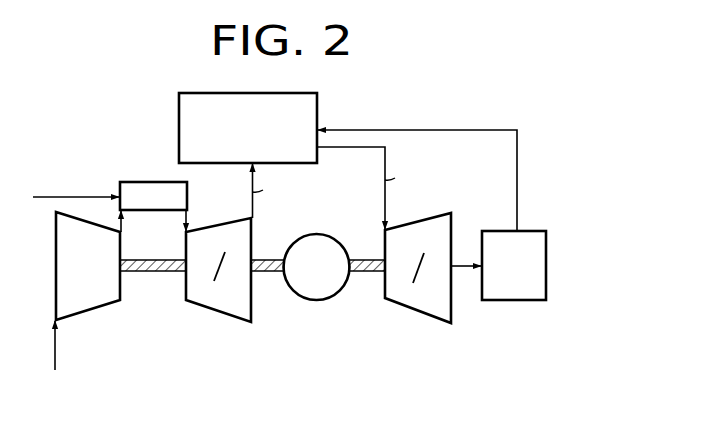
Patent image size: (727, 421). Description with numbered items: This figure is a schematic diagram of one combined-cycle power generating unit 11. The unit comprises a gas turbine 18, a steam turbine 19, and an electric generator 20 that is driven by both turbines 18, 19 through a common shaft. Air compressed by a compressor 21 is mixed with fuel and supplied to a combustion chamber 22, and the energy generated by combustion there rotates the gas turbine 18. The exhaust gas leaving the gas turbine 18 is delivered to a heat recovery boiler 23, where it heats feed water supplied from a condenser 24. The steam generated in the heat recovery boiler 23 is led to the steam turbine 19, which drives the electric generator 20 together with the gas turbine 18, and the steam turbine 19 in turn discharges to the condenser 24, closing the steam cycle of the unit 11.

The combined-cycle power generating unit 11 is at (565, 104).
The gas turbine 18 is at (208, 311).
The steam turbine 19 is at (411, 315).
The electric generator 20 is at (318, 300).
The compressor 21 is at (97, 311).
The combustion chamber 22 is at (143, 181).
The heat recovery boiler 23 is at (317, 110).
The condenser 24 is at (546, 290).